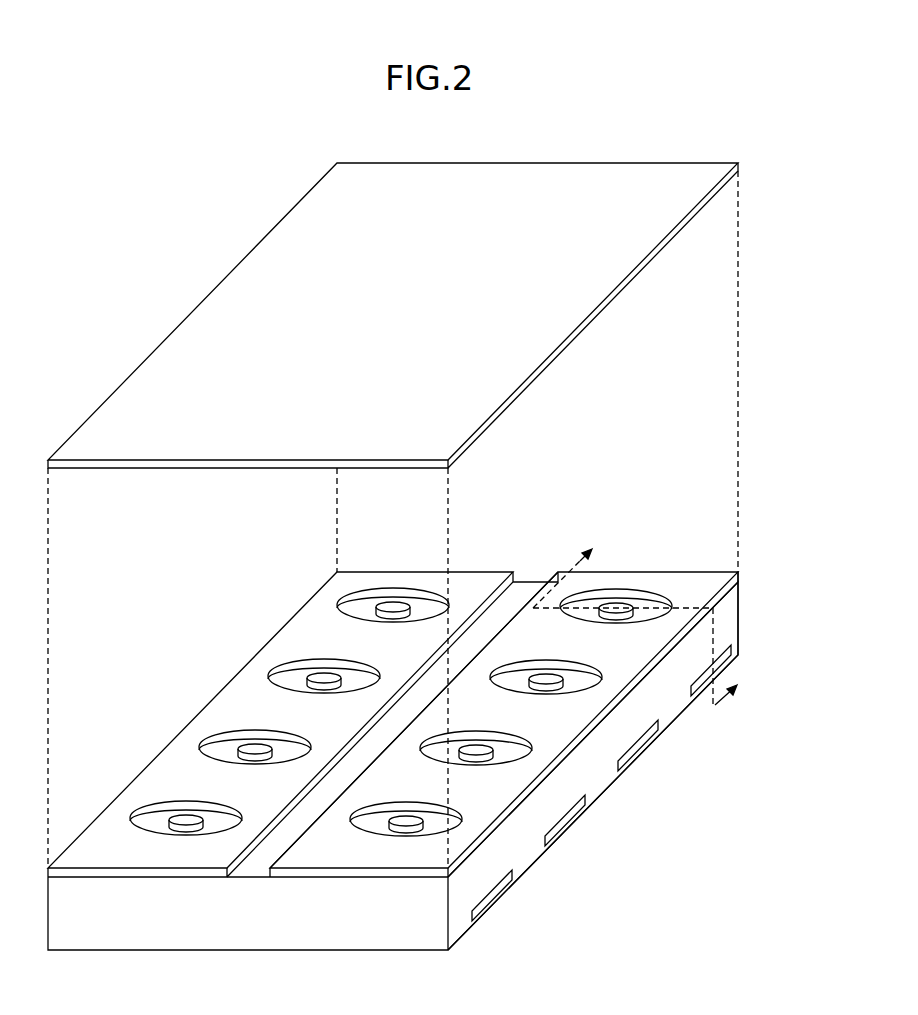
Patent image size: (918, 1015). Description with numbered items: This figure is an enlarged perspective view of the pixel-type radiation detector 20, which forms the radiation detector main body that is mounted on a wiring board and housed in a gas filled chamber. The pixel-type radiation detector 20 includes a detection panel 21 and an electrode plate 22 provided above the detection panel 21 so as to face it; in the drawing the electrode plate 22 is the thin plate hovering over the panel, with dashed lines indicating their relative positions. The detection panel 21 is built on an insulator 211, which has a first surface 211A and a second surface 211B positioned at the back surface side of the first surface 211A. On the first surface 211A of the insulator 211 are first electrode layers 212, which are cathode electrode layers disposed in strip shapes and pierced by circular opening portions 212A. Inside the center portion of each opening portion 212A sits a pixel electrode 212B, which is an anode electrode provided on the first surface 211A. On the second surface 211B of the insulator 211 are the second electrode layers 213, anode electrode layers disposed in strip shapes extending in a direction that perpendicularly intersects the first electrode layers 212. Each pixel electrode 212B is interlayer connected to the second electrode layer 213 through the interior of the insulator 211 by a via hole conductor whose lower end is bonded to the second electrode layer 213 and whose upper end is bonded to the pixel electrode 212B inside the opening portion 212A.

The pixel-type radiation detector 20 is at (427, 536).
The detection panel 21 is at (427, 728).
The electrode plate 22 is at (584, 172).
The insulator 211 is at (427, 738).
The first surface 211A is at (717, 592).
The second surface 211B is at (614, 766).
The first electrode layer 212 is at (424, 671).
The opening portion 212A is at (588, 680).
The pixel electrode 212B is at (625, 790).
The second electrode layer 213 is at (687, 708).